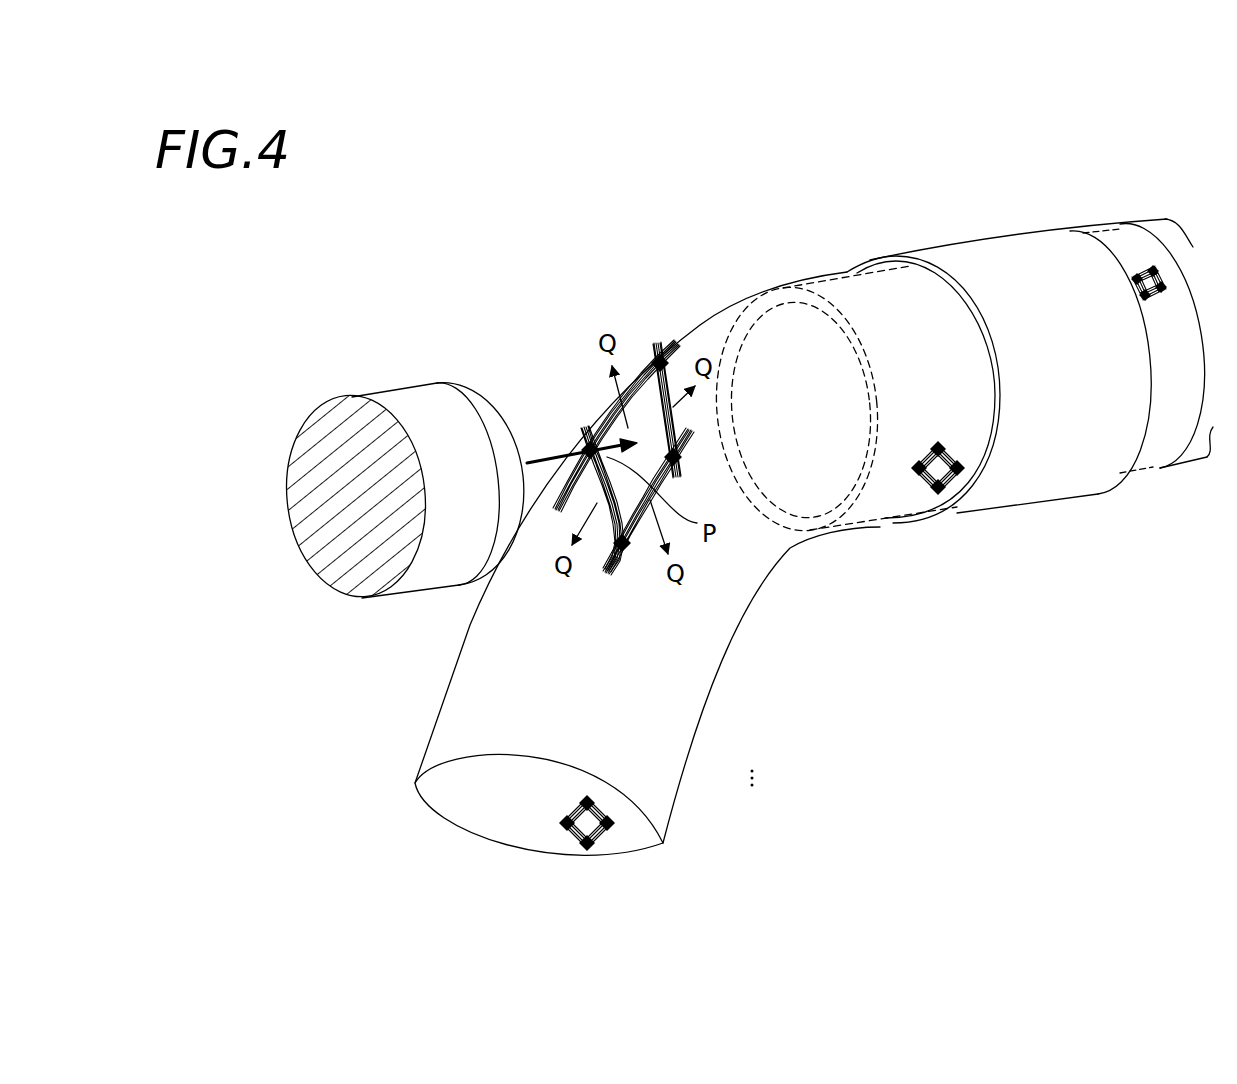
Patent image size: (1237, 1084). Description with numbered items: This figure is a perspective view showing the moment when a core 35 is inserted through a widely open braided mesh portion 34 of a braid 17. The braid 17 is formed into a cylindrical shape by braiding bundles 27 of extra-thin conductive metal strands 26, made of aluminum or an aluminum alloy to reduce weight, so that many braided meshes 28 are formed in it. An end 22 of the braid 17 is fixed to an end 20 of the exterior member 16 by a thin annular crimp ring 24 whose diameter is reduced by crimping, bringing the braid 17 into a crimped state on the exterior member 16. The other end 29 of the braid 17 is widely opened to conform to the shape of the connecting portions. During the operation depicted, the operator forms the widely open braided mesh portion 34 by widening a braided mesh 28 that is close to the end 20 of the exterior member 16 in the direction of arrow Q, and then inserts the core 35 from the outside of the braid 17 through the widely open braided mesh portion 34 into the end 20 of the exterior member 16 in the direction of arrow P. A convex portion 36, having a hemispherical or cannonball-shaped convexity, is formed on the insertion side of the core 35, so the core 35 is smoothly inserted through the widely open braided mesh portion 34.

The exterior member 16 is at (1190, 448).
The braid 17 is at (703, 645).
The end of the exterior member 20 is at (752, 312).
The end of the braid 22 is at (1124, 244).
The crimp ring 24 is at (982, 252).
The metal strands 26 is at (737, 806).
The bundles 27 is at (690, 810).
The braided meshes 28 is at (600, 845).
The other end of the braid 29 is at (430, 807).
The widely open braided mesh portion 34 is at (630, 430).
The core 35 is at (402, 397).
The convex portion 36 is at (495, 427).